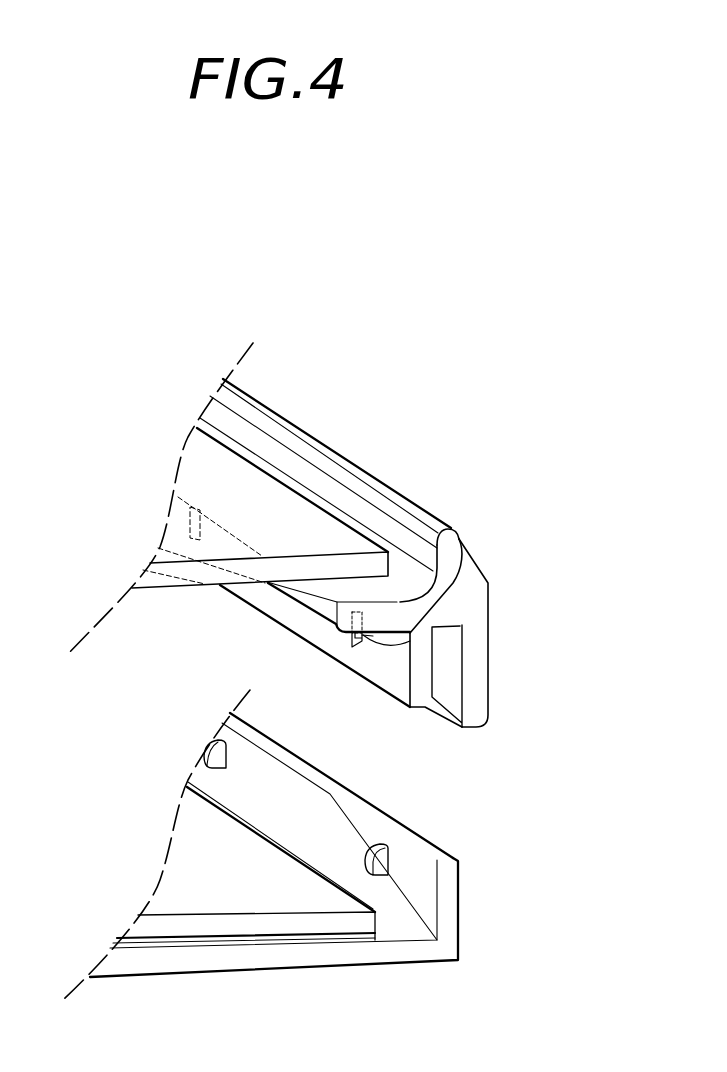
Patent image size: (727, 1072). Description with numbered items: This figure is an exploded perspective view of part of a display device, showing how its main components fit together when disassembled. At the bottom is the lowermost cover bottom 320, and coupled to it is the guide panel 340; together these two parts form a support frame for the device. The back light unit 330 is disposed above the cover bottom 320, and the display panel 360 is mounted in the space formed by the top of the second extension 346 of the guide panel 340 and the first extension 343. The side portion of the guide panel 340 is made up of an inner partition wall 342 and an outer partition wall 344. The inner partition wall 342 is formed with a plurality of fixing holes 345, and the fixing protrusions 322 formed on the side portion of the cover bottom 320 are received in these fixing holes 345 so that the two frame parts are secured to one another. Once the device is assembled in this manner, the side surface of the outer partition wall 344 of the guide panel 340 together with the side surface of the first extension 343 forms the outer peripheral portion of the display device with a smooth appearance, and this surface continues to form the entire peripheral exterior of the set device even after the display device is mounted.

The display panel 360 is at (197, 473).
The guide panel 340 is at (451, 465).
The first extension 343 is at (468, 544).
The fixing hole 345 is at (437, 600).
The inner partition wall 342 is at (427, 677).
The outer partition wall 344 is at (480, 700).
The second extension 346 is at (373, 637).
The back light unit 330 is at (178, 850).
The fixing protrusion 322 is at (381, 860).
The cover bottom 320 is at (447, 938).